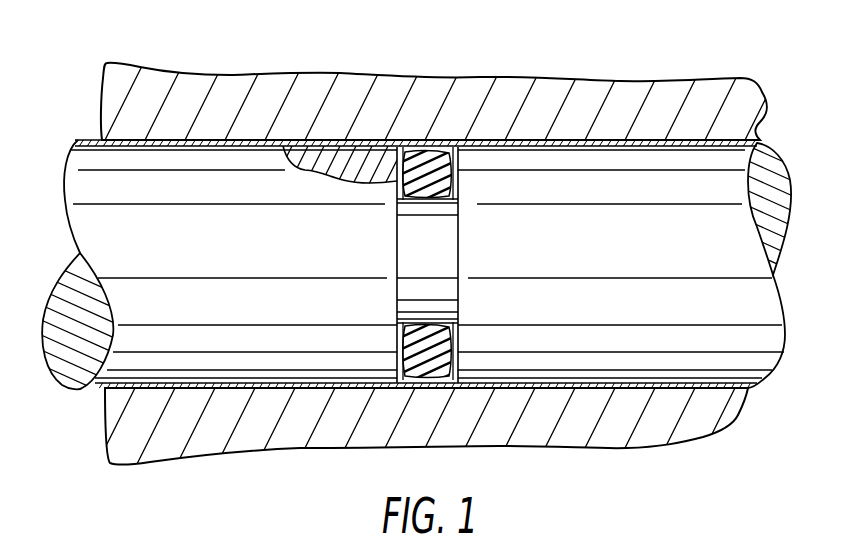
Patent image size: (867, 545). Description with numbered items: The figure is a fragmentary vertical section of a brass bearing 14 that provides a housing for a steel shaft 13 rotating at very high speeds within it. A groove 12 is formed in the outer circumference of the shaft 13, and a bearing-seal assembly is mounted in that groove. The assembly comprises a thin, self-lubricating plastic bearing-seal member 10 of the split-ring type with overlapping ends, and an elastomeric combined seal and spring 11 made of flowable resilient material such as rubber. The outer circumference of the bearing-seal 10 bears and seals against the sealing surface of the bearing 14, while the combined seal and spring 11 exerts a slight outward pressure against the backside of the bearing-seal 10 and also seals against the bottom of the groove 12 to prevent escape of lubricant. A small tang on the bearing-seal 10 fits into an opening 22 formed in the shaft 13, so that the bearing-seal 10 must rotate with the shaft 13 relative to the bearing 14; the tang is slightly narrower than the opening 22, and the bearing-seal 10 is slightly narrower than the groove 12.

The bearing-seal member 10 is at (365, 131).
The elastomeric combined seal and spring 11 is at (397, 201).
The groove 12 is at (458, 185).
The steel shaft 13 is at (562, 260).
The brass bearing 14 is at (554, 118).
The opening 22 is at (342, 173).